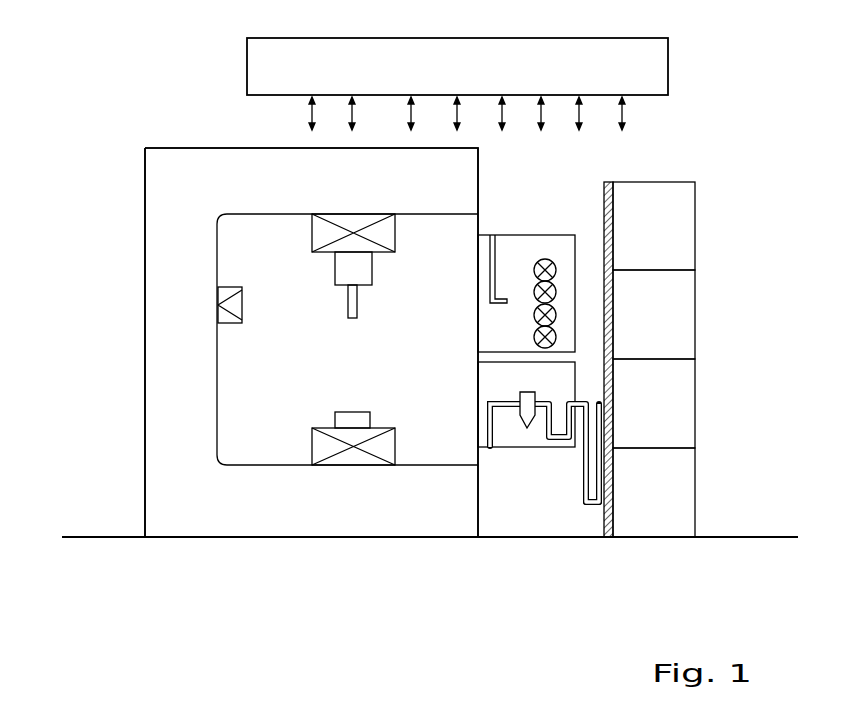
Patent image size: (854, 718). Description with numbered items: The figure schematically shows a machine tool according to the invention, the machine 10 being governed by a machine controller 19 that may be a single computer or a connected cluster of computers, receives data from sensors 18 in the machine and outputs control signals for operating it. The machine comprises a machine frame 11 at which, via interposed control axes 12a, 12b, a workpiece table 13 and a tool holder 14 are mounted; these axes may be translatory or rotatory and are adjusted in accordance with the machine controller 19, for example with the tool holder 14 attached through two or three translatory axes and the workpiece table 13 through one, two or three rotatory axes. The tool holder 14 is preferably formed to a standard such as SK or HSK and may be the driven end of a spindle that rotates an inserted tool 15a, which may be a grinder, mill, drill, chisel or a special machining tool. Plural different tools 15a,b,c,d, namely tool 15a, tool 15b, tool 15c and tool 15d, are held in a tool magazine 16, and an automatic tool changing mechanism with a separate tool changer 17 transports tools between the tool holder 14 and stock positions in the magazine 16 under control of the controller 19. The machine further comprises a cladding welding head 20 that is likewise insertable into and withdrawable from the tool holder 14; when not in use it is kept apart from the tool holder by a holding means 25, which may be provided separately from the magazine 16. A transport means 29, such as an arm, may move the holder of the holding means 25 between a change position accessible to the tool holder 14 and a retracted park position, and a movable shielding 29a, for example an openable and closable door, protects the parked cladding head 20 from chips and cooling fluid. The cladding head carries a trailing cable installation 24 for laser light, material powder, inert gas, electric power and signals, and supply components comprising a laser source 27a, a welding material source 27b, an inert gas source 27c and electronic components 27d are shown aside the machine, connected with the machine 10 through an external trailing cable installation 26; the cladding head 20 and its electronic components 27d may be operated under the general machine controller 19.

The machine 10 is at (152, 104).
The machine frame 11 is at (155, 357).
The control axis 12a is at (318, 448).
The control axis 12b is at (318, 232).
The workpiece table 13 is at (340, 420).
The tool holder 14 is at (362, 268).
The tool 15a is at (355, 308).
The tools 15a,b,c,d is at (545, 262).
The tool 15b is at (545, 292).
The tool 15c is at (545, 315).
The tool 15d is at (545, 337).
The tool magazine 16 is at (523, 245).
The tool changer 17 is at (492, 235).
The sensors 18 is at (218, 303).
The machine controller 19 is at (662, 68).
The cladding welding head 20 is at (527, 425).
The trailing cable installation 24 is at (558, 441).
The holding means 25 is at (507, 432).
The external trailing cable installation 26 is at (588, 506).
The laser source 27a is at (686, 226).
The welding material source 27b is at (686, 316).
The inert gas source 27c is at (686, 405).
The electronic components 27d is at (686, 483).
The transport means 29 is at (497, 448).
The movable shielding 29a is at (477, 422).